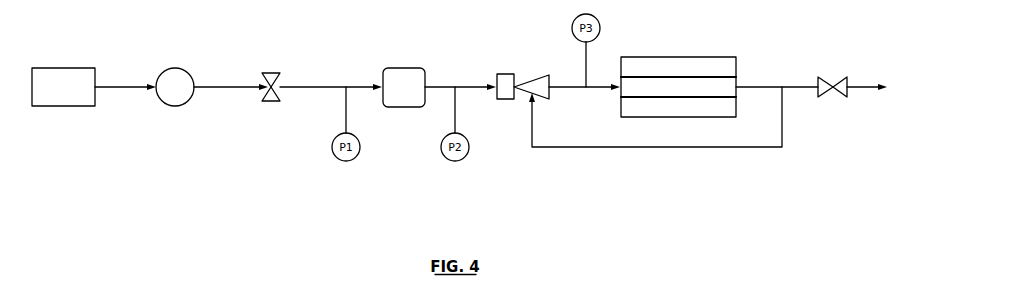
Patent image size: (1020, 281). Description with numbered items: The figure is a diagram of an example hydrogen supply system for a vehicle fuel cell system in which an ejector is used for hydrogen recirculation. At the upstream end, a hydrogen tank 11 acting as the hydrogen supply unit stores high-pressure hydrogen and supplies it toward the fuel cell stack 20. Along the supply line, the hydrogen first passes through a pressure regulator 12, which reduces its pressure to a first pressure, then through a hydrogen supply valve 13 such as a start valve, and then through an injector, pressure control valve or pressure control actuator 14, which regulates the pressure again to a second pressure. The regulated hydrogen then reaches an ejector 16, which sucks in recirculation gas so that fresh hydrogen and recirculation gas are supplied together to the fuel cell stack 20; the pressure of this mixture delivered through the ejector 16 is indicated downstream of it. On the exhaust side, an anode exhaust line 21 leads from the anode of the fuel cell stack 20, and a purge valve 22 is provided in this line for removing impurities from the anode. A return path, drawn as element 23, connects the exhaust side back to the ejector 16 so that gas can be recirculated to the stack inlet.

The hydrogen tank 11 is at (62, 107).
The pressure regulator 12 is at (175, 106).
The hydrogen supply valve 13 is at (268, 101).
The injector, pressure control valve, or pressure control actuator 14 is at (402, 107).
The ejector 16 is at (503, 99).
The fuel cell stack 20 is at (655, 117).
The anode exhaust line 21 is at (757, 85).
The purge valve 22 is at (835, 97).
The recirculation line 23 is at (725, 147).